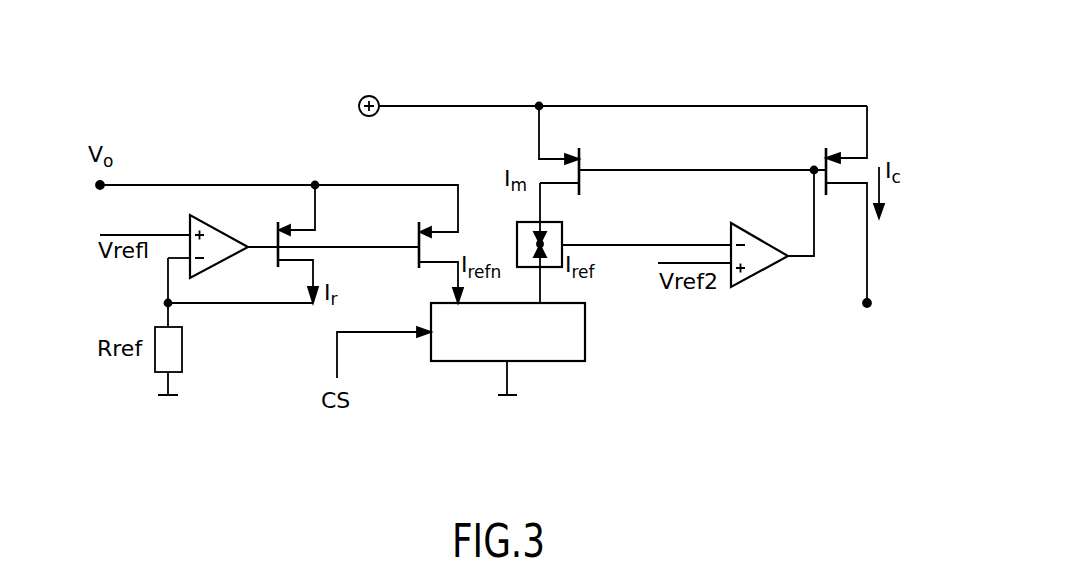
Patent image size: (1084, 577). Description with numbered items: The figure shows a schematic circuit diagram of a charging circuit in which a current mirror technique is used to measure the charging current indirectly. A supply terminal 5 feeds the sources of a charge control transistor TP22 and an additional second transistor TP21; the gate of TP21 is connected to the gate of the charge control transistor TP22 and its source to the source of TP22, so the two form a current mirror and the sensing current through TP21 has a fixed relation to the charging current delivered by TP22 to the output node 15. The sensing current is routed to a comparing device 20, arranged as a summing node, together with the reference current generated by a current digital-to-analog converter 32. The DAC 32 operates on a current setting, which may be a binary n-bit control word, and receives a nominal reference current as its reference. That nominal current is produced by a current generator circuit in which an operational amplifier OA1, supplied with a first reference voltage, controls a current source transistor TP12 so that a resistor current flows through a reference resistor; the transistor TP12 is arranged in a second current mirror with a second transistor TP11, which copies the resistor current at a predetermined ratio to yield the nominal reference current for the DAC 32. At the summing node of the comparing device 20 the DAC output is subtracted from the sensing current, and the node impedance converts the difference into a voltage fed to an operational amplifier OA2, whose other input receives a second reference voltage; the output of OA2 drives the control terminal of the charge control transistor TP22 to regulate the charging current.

The supply voltage terminal 5 is at (613, 120).
The operational amplifier OA1 is at (208, 285).
The current source transistor TP12 is at (291, 270).
The second transistor TP11 is at (427, 272).
The current digital-to-analog converter 32 is at (508, 349).
The comparing device 20 is at (517, 237).
The second transistor TP21 is at (567, 205).
The charge control transistor TP22 is at (834, 205).
The output node 15 is at (867, 303).
The operational amplifier OA2 is at (748, 295).